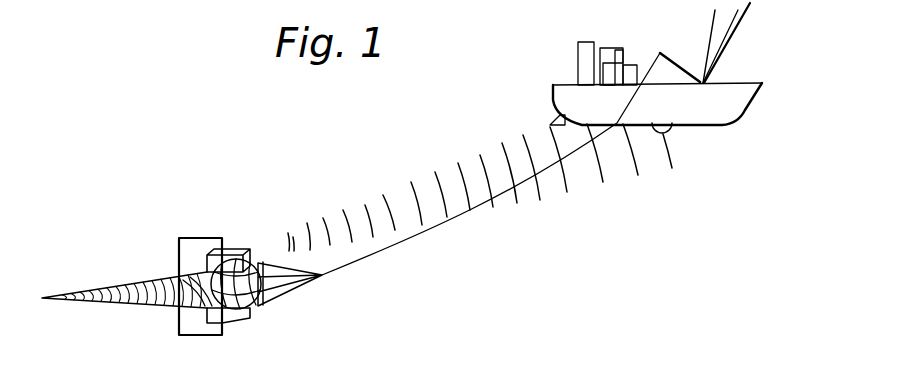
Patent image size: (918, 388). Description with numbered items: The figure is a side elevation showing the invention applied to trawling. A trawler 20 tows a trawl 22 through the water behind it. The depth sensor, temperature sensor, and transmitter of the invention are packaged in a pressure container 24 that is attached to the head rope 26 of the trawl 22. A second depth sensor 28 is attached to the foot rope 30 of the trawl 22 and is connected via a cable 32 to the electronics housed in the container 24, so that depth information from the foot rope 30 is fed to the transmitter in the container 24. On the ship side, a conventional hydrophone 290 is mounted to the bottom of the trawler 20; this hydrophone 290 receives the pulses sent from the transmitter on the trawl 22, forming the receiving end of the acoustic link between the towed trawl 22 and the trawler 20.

The trawler 20 is at (750, 83).
The trawl 22 is at (130, 279).
The pressure container 24 is at (232, 249).
The head rope 26 is at (253, 257).
The second depth sensor 28 is at (240, 318).
The foot rope 30 is at (262, 306).
The cable 32 is at (178, 323).
The hydrophone 290 is at (665, 128).